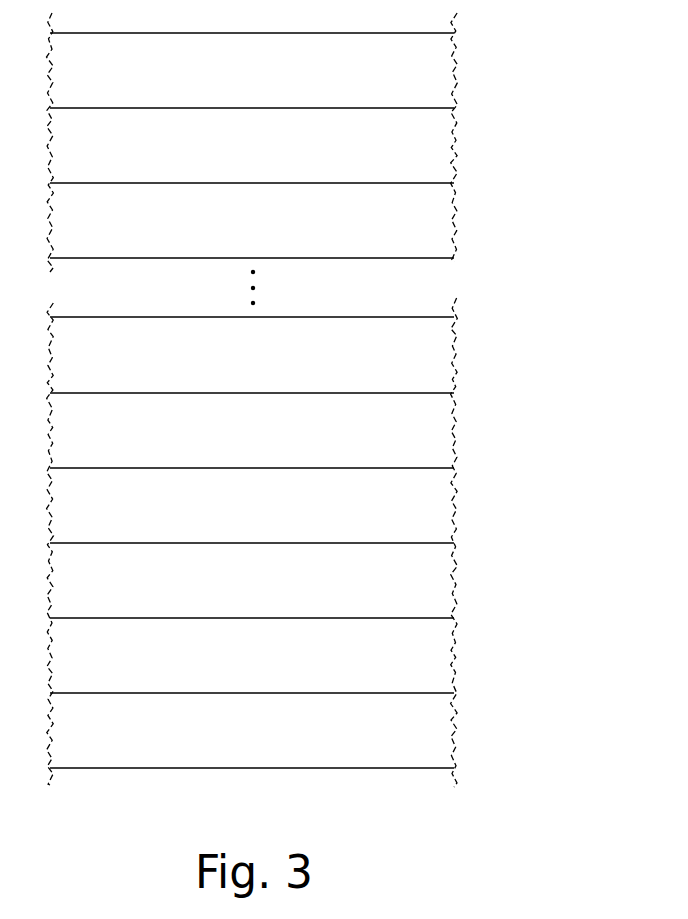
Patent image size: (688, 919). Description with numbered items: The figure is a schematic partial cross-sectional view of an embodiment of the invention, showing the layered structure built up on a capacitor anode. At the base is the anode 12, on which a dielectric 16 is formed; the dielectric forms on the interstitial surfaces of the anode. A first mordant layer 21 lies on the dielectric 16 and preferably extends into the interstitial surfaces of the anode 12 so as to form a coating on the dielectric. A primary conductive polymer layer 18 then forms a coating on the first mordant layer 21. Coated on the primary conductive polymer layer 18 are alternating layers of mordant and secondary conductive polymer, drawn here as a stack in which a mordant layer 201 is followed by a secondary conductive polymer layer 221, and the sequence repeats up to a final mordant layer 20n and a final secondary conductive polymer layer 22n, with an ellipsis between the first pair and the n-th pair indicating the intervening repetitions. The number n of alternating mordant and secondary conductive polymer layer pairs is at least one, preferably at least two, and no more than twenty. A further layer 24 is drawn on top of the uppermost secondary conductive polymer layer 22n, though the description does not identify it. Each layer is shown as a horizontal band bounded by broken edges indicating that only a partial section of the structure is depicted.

The anode 12 is at (403, 738).
The dielectric 16 is at (400, 665).
The first mordant layer 21 is at (408, 591).
The primary conductive polymer layer 18 is at (413, 516).
The mordant layer 201 is at (403, 440).
The secondary conductive polymer layer 221 is at (400, 365).
The mordant layer 20n is at (392, 228).
The secondary conductive polymer layer 22n is at (388, 148).
The top layer 24 is at (382, 70).